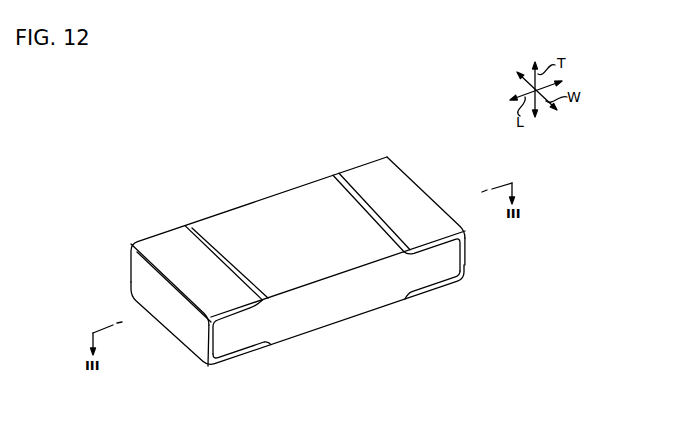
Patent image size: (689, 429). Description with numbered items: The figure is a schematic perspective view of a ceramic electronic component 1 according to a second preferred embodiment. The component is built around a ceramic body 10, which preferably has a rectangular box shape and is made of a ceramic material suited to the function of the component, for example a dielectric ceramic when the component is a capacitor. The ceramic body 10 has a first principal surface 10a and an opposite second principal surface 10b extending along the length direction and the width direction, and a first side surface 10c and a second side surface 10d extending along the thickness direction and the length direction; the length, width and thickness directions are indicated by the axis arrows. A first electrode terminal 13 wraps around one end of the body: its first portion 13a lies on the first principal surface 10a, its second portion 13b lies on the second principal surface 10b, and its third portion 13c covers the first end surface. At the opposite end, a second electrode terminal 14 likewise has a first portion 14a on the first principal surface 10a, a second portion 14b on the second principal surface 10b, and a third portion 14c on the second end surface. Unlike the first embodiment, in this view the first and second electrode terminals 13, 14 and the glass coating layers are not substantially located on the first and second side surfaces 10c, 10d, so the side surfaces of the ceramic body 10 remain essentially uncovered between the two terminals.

The ceramic electronic component 1 is at (424, 141).
The ceramic body 10 is at (347, 323).
The first principal surface 10a is at (319, 217).
The second principal surface 10b is at (304, 336).
The first side surface 10c is at (392, 283).
The second side surface 10d is at (253, 203).
The first electrode terminal 13 is at (175, 347).
The first portion of first electrode terminal 13a is at (170, 233).
The second portion of first electrode terminal 13b is at (242, 363).
The third portion of first electrode terminal 13c is at (143, 286).
The second electrode terminal 14 is at (473, 273).
The first portion of second electrode terminal 14a is at (418, 205).
The second portion of second electrode terminal 14b is at (438, 292).
The third portion of second electrode terminal 14c is at (469, 247).